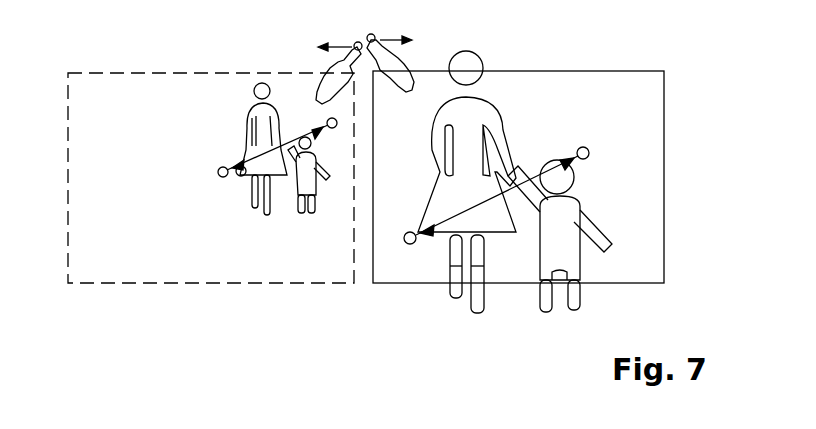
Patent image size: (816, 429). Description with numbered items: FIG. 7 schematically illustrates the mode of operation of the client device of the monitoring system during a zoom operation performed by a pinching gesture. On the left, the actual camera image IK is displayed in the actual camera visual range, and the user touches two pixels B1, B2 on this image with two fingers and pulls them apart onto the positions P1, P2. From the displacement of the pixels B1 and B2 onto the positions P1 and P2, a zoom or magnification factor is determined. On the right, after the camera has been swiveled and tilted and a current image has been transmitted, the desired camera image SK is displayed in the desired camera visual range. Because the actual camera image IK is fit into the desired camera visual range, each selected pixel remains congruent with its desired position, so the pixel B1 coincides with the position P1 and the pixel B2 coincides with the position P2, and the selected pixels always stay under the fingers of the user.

The first desired position P1 is at (218, 172).
The first selected pixel B1 is at (241, 177).
The second desired position P2 is at (337, 122).
The second selected pixel B2 is at (311, 144).
The actual camera image IK is at (211, 178).
The desired camera image SK is at (518, 177).